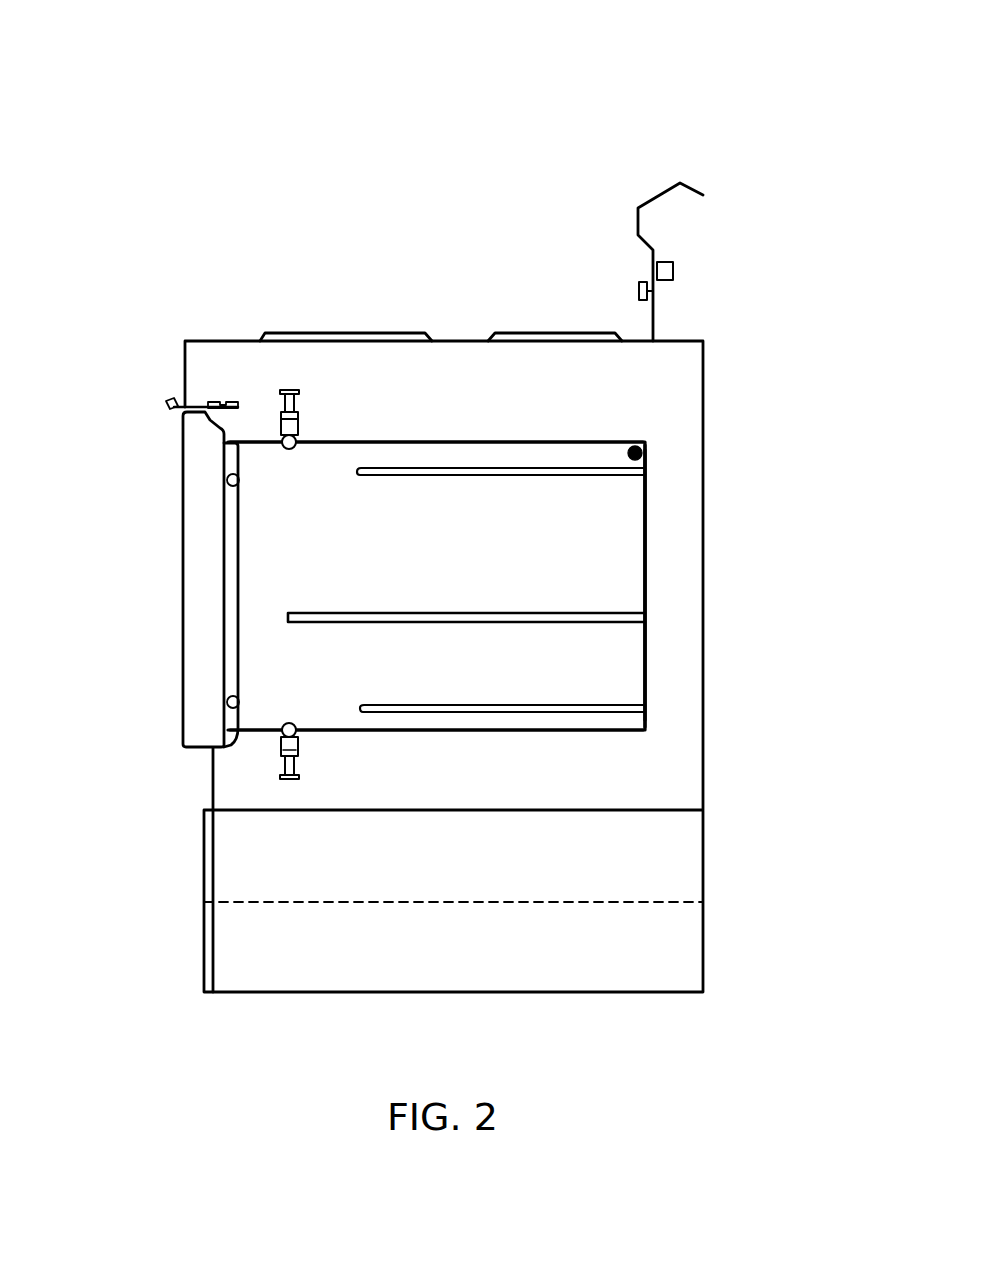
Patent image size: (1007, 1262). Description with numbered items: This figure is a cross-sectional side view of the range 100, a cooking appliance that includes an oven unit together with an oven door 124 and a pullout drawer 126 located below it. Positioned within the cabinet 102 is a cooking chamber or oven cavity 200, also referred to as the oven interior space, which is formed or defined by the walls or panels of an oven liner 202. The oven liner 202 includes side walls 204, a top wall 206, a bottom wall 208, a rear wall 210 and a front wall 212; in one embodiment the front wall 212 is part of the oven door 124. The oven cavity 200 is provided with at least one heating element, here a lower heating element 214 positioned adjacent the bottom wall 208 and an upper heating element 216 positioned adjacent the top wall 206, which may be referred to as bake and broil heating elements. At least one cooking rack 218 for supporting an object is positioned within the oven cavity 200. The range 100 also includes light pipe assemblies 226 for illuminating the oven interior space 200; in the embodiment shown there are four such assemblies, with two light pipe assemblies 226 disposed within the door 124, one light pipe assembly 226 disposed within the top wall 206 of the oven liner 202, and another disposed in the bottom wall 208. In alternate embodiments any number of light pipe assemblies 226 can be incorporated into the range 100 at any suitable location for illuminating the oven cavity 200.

The range 100 is at (412, 102).
The cabinet 102 is at (203, 338).
The oven door 124 is at (178, 603).
The pullout drawer 126 is at (205, 913).
The oven cavity 200 is at (463, 548).
The oven liner 202 is at (307, 727).
The side walls 204 is at (646, 648).
The top wall 206 is at (418, 440).
The bottom wall 208 is at (502, 733).
The rear wall 210 is at (645, 557).
The front wall 212 is at (235, 537).
The lower heating element 214 is at (632, 713).
The upper heating element 216 is at (647, 471).
The cooking rack 218 is at (323, 612).
The light pipe assemblies 226 is at (303, 437).